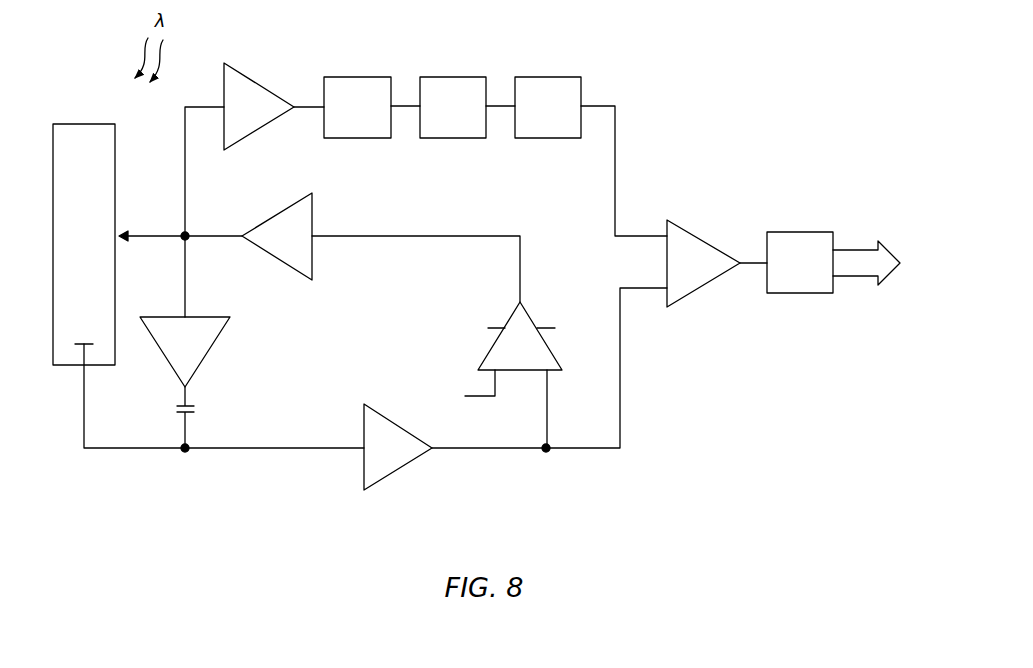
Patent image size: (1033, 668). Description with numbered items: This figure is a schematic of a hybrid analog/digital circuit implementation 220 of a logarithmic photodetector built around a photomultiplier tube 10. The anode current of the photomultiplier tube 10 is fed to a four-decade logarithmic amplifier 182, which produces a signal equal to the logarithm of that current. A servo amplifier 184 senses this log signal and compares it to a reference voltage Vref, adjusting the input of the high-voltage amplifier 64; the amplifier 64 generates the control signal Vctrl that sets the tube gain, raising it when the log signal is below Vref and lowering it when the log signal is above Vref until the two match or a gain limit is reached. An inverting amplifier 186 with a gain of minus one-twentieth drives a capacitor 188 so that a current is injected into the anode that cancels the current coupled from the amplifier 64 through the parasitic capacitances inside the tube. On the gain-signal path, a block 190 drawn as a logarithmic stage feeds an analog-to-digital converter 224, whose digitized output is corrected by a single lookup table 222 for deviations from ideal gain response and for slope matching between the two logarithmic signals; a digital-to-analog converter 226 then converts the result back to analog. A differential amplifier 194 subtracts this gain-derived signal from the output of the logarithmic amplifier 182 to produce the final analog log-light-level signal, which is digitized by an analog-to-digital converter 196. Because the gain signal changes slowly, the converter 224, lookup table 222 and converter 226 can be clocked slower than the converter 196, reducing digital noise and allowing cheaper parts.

The photomultiplier tube 10 is at (82, 124).
The amplifier 64 is at (313, 215).
The logarithmic amplifier 182 is at (412, 468).
The servo amplifier 184 is at (512, 300).
The inverting amplifier 186 is at (210, 350).
The capacitor 188 is at (198, 408).
The logarithmic amplifier 190 is at (262, 82).
The differential amplifier 194 is at (706, 238).
The analog-to-digital converter 196 is at (800, 232).
The hybrid analog/digital circuit implementation 220 is at (640, 470).
The lookup table 222 is at (451, 77).
The analog-to-digital converter 224 is at (356, 77).
The digital-to-analog converter 226 is at (547, 77).